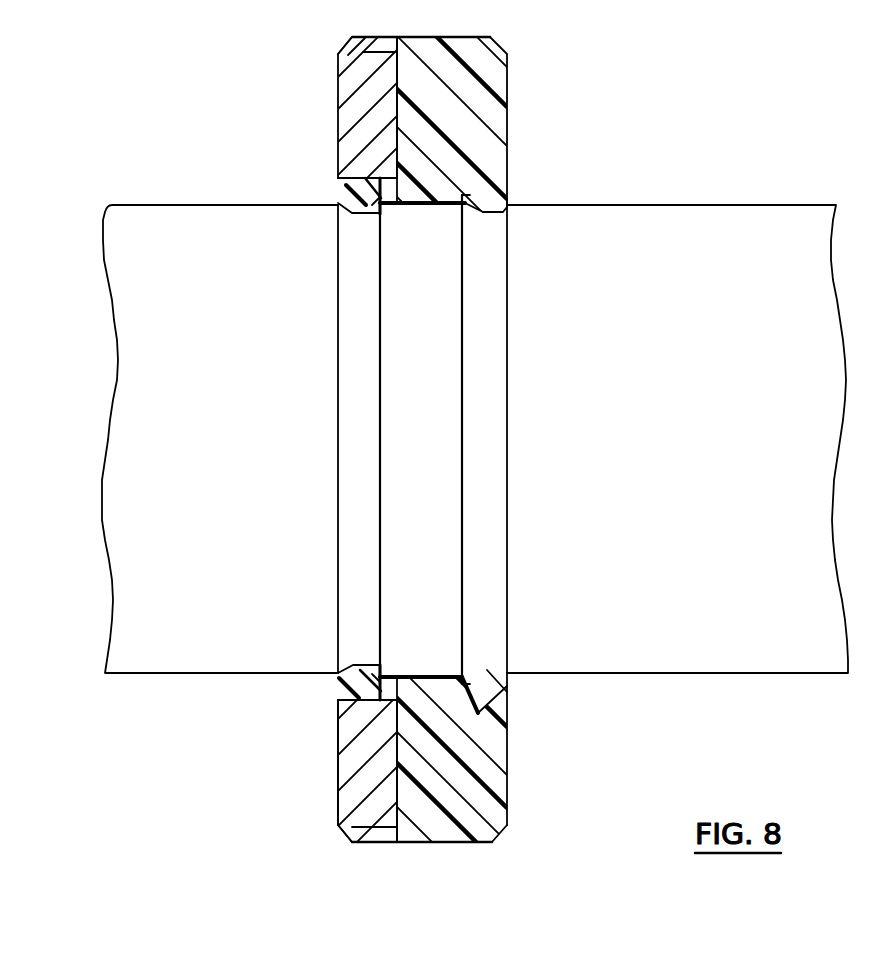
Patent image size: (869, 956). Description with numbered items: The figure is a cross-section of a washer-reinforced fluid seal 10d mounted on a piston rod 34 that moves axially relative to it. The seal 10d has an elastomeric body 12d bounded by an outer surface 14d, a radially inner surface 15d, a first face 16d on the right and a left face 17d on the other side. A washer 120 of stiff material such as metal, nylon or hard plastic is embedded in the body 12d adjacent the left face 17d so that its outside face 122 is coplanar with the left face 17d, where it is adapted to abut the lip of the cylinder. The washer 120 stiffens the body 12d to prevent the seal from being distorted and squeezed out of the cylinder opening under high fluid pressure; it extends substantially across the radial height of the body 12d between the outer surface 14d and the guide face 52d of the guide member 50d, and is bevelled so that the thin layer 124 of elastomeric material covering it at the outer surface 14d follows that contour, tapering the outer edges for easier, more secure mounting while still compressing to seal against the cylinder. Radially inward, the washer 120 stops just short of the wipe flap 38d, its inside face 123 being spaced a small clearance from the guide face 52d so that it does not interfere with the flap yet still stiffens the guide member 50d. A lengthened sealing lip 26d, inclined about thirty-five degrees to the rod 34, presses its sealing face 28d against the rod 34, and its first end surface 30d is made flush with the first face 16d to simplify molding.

The seal 10d is at (196, 790).
The body 12d is at (336, 670).
The outer surface 14d is at (405, 843).
The radially inner surface 15d is at (427, 660).
The first face 16d is at (518, 785).
The left face 17d is at (322, 813).
The sealing lip 26d is at (474, 676).
The sealing face 28d is at (474, 686).
The first end surface 30d is at (511, 689).
The piston rod 34 is at (160, 676).
The wipe flap 38d is at (328, 683).
The guide member 50d is at (402, 684).
The guide face 52d is at (460, 672).
The washer 120 is at (358, 772).
The outside face 122 is at (340, 742).
The inside face 123 is at (340, 695).
The thin layer 124 is at (376, 836).